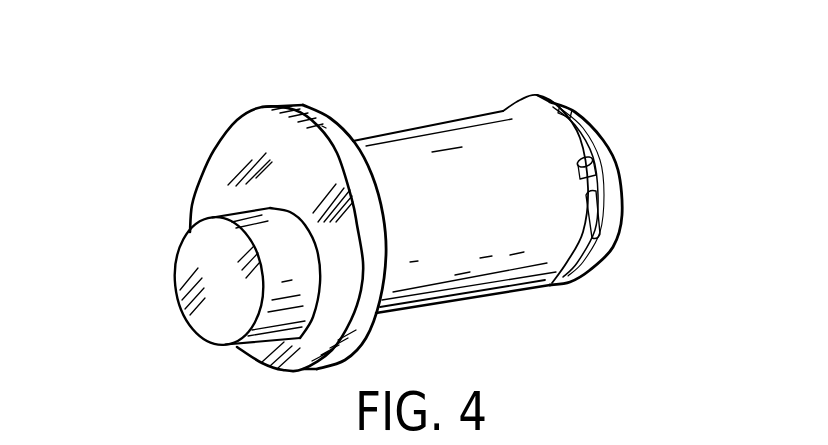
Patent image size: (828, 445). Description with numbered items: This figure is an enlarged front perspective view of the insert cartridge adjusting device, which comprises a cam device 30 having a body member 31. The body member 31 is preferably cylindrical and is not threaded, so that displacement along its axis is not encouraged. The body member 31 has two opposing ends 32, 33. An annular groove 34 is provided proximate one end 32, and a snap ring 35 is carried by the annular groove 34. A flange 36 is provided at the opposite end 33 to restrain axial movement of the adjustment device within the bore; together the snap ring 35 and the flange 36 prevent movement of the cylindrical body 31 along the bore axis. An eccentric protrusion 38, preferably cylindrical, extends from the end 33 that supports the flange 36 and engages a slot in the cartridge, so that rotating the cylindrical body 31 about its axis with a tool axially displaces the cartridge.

The cam device 30 is at (243, 51).
The body member 31 is at (433, 108).
The end 32 is at (673, 188).
The end 33 is at (147, 298).
The annular groove 34 is at (596, 174).
The snap ring 35 is at (547, 100).
The flange 36 is at (230, 145).
The eccentric protrusion 38 is at (218, 308).